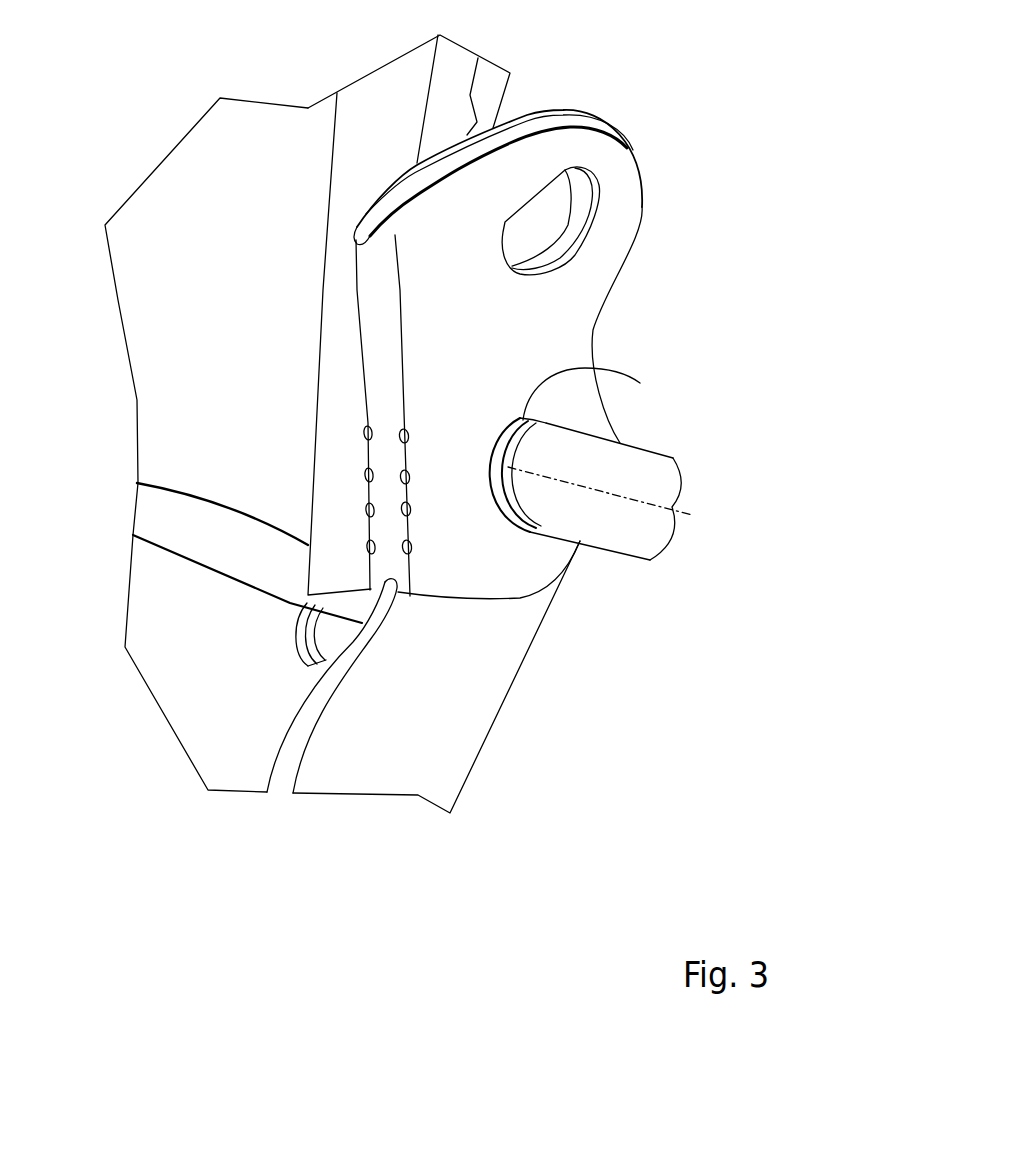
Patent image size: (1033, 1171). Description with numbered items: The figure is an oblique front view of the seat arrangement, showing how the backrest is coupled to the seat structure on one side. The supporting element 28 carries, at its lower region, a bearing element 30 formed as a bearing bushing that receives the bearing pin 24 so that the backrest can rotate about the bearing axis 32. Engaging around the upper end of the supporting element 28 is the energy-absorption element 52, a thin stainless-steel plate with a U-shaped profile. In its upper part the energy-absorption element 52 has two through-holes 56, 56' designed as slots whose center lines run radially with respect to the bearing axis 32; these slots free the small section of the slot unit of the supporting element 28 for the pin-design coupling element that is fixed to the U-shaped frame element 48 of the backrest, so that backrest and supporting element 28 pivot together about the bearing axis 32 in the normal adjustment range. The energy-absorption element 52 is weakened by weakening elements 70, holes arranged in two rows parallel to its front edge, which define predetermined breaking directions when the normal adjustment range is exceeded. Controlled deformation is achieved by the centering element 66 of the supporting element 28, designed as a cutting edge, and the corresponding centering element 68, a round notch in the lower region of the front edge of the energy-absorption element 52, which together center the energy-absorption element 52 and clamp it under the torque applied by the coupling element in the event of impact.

The U-shaped frame element 48 is at (400, 98).
The energy-absorption element 52 is at (602, 157).
The through-hole 56 is at (639, 236).
The through-hole 56' is at (647, 219).
The bearing element 30 is at (585, 368).
The bearing pin 24 is at (620, 460).
The bearing axis 32 is at (673, 510).
The weakening elements 70 is at (400, 443).
The centering element 68 is at (307, 587).
The centering element 66 is at (393, 625).
The supporting element 28 is at (457, 712).